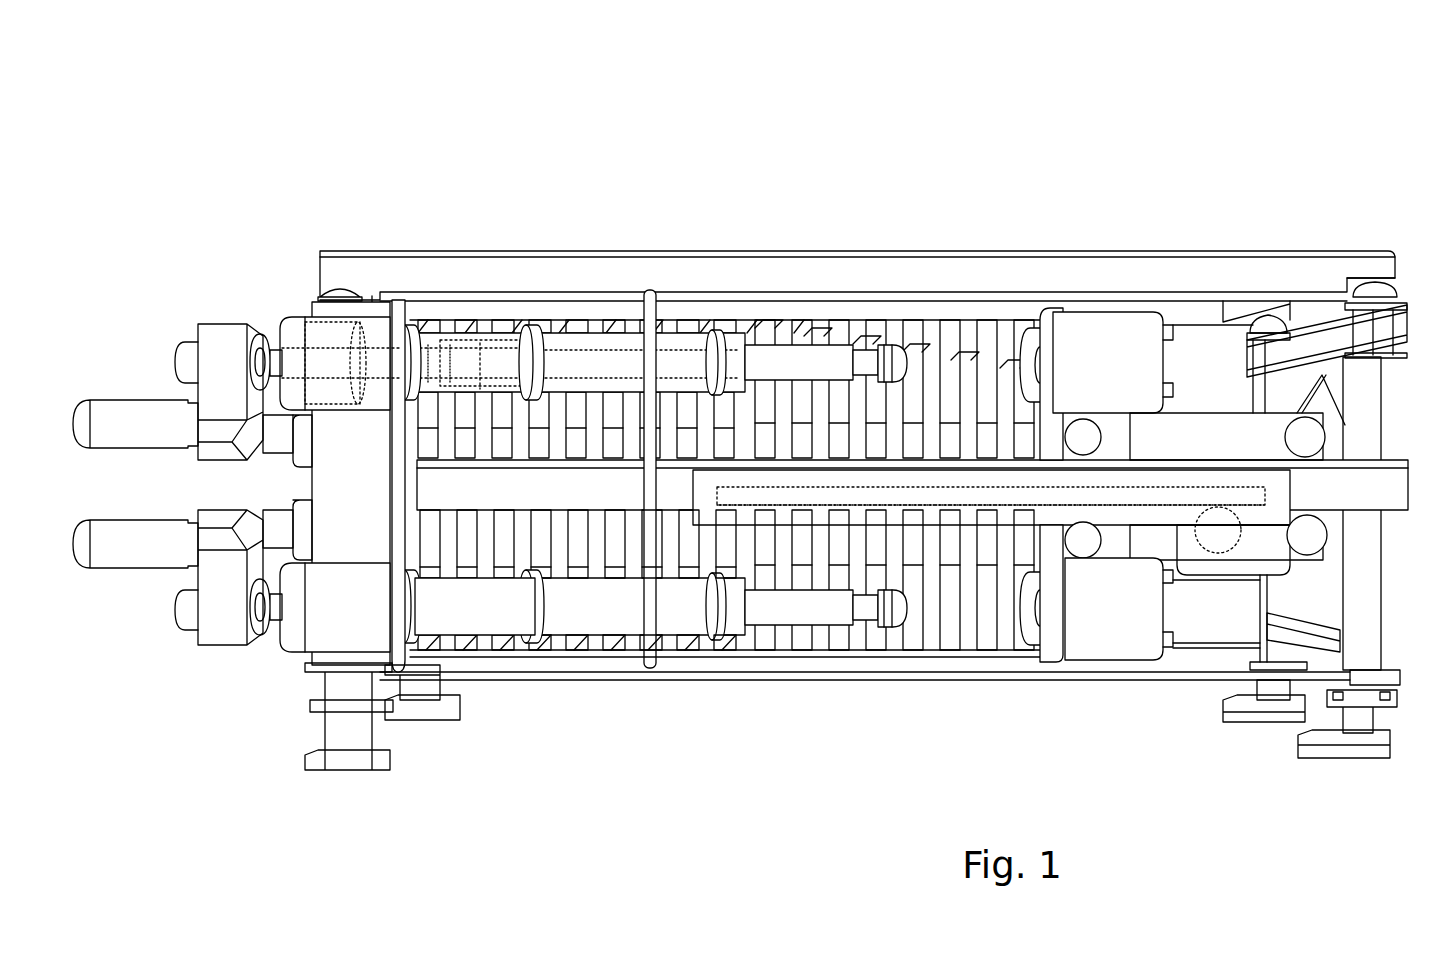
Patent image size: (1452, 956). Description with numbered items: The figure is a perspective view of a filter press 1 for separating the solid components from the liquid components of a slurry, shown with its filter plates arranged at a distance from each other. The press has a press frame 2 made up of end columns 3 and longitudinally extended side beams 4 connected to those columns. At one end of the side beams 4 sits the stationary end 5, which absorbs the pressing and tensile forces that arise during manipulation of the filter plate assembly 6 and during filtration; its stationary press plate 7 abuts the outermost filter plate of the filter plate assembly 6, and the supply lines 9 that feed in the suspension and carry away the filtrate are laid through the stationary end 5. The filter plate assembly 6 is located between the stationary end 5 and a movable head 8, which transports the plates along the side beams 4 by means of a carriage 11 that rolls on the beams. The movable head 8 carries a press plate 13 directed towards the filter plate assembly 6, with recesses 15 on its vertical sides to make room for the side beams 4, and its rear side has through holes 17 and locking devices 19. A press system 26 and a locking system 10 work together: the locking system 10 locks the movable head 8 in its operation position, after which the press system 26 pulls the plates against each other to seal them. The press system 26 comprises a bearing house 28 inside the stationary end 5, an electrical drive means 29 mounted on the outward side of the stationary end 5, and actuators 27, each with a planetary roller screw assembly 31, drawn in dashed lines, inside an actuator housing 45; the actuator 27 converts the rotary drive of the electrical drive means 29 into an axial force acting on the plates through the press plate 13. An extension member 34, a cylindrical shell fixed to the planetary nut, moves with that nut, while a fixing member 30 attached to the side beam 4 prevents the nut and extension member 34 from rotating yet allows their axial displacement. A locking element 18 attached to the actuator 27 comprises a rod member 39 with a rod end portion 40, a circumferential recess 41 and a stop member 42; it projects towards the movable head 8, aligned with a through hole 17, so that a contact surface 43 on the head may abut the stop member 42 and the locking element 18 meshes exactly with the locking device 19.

The filter press 1 is at (424, 122).
The press frame 2 is at (1292, 226).
The end columns 3 is at (1368, 630).
The side beams 4 is at (1393, 500).
The stationary end 5 is at (341, 497).
The filter plate assembly 6 is at (940, 370).
The stationary press plate 7 is at (400, 662).
The movable head 8 is at (1102, 622).
The supply lines 9 is at (270, 320).
The locking system 10 is at (1064, 234).
The carriage 11 is at (1110, 694).
The press plate 13 is at (1056, 652).
The recesses 15 is at (1080, 432).
The through hole 17 is at (1021, 356).
The locking element 18 is at (826, 360).
The locking device 19 is at (1165, 312).
The press system 26 is at (378, 238).
The actuator 27 is at (430, 316).
The bearing house 28 is at (318, 330).
The electrical drive means 29 is at (118, 418).
The fixing member 30 is at (650, 664).
The planetary roller screw assembly 31 is at (485, 350).
The extension member 34 is at (585, 365).
The rod member 39 is at (801, 606).
The rod end portion 40 is at (888, 606).
The recess 41 is at (866, 355).
The stop member 42 is at (716, 355).
The contact surface 43 is at (1035, 621).
The actuator housing 45 is at (527, 606).